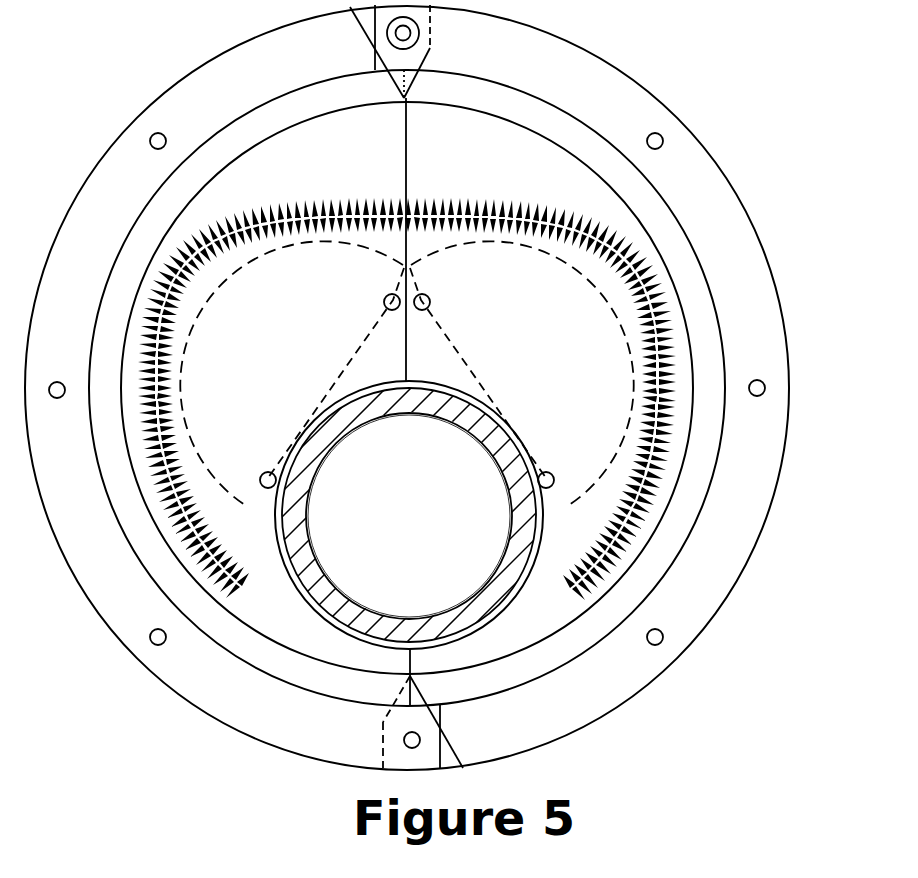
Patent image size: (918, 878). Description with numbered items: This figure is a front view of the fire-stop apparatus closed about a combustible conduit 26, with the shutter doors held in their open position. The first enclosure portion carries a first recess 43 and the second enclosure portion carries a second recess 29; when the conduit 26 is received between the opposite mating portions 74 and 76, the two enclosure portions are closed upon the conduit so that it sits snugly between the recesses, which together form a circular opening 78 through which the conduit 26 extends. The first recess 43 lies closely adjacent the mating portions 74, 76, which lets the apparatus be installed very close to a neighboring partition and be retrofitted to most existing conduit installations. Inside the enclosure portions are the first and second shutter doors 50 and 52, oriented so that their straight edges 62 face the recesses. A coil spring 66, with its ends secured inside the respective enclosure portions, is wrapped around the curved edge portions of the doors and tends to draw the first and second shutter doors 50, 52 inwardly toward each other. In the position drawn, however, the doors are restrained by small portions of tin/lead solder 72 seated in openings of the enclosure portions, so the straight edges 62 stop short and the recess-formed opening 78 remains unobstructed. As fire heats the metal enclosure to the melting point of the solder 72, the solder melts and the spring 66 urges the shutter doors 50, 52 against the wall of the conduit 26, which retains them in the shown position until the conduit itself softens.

The conduit 26 is at (500, 592).
The second recess 29 is at (305, 598).
The first recess 43 is at (543, 532).
The first shutter door 50 is at (620, 368).
The second shutter door 52 is at (244, 368).
The straight edges 62 is at (364, 333).
The coil spring 66 is at (542, 200).
The solder portions 72 is at (392, 294).
The mating portion 74 is at (393, 776).
The mating portion 76 is at (427, 762).
The circular opening 78 is at (347, 647).